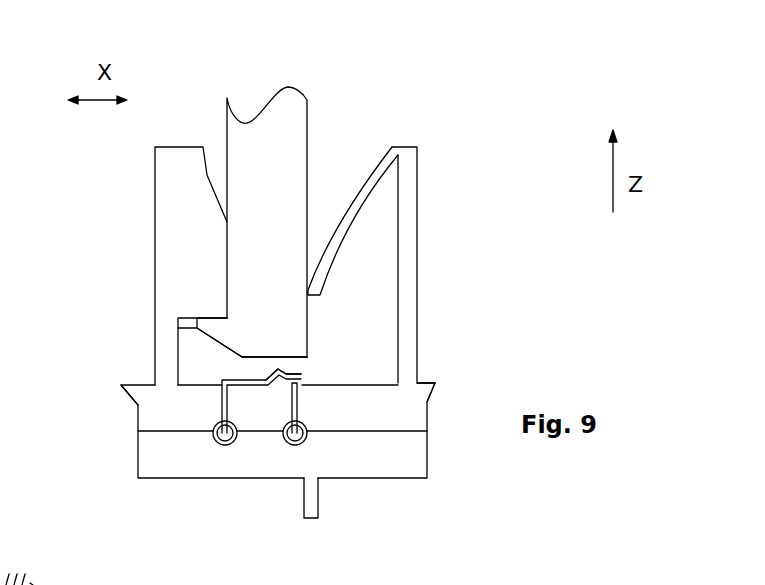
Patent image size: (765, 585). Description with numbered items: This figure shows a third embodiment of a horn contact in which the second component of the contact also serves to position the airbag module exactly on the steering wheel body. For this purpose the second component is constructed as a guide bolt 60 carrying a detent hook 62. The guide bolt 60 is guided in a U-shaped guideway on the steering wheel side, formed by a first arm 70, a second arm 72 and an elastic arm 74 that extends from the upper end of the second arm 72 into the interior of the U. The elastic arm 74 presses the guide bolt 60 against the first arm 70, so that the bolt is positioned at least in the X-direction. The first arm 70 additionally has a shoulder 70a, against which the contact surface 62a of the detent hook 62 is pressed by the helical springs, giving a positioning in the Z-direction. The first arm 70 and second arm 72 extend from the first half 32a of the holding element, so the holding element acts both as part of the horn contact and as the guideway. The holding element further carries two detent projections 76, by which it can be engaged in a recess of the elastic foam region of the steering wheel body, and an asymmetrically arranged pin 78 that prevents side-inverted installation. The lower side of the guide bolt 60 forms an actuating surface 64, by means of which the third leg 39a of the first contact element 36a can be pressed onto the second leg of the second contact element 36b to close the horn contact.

The first half of the holding element 32a is at (395, 408).
The first contact element 36a is at (212, 438).
The second contact element 36b is at (299, 393).
The third leg of the first contact element 39a is at (279, 376).
The guide bolt 60 is at (287, 192).
The detent hook 62 is at (213, 325).
The contact surface of the detent hook 62a is at (205, 318).
The actuating surface 64 is at (273, 358).
The first arm 70 is at (168, 282).
The shoulder 70a is at (213, 325).
The second arm 72 is at (410, 300).
The elastic arm 74 is at (338, 238).
The detent projections 76 is at (133, 386).
The pin 78 is at (312, 495).